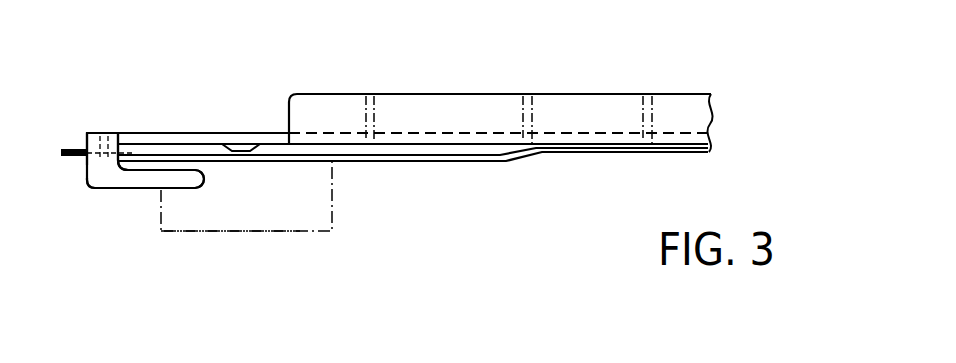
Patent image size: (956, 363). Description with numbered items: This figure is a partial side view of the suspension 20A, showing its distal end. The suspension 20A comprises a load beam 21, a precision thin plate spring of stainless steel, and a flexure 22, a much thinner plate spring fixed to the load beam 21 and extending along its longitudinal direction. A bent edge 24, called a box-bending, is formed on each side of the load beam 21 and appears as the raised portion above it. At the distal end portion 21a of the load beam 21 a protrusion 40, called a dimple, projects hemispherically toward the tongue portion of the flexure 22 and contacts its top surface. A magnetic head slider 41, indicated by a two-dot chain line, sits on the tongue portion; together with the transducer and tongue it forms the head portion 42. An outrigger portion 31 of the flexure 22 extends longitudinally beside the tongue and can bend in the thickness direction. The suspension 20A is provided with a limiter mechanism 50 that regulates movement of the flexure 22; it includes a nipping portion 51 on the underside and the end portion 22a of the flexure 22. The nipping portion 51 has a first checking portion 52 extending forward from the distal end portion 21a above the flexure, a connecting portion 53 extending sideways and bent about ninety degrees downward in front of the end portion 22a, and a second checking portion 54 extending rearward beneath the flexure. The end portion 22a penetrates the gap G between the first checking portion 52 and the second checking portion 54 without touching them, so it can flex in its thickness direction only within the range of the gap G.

The suspension 20A is at (706, 54).
The load beam 21 is at (719, 124).
The distal end portion of the load beam 21a is at (183, 131).
The flexure 22 is at (592, 153).
The end portion of the flexure 22a is at (95, 168).
The bent edge 24 is at (604, 93).
The outrigger portion 31 is at (447, 164).
The protrusion 40 is at (246, 152).
The magnetic head slider 41 is at (313, 231).
The head portion 42 is at (227, 240).
The limiter mechanism 50 is at (104, 106).
The nipping portion 51 is at (84, 191).
The first checking portion 52 is at (137, 132).
The connecting portion 53 is at (87, 141).
The second checking portion 54 is at (151, 181).
The gap G is at (137, 170).